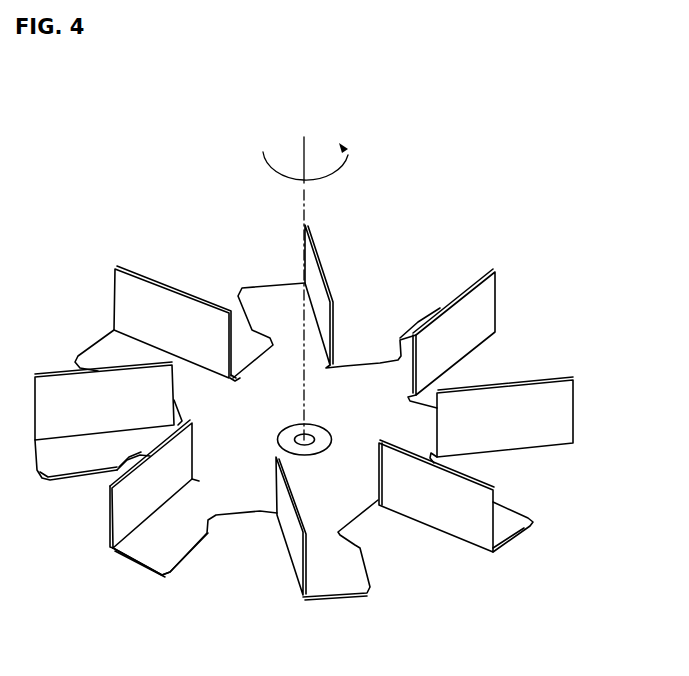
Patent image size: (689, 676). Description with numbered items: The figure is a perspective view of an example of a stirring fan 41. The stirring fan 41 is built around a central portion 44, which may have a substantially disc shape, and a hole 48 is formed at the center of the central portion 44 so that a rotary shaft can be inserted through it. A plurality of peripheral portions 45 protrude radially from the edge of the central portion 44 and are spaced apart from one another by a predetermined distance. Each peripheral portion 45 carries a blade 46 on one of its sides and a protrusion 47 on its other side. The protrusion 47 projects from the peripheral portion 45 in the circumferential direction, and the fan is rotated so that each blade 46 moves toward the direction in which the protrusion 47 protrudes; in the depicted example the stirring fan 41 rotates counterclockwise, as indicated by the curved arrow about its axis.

The stirring fan 41 is at (453, 168).
The central portion 44 is at (355, 388).
The peripheral portion 45 is at (145, 535).
The blade 46 is at (117, 512).
The protrusion 47 is at (190, 558).
The hole 48 is at (317, 443).